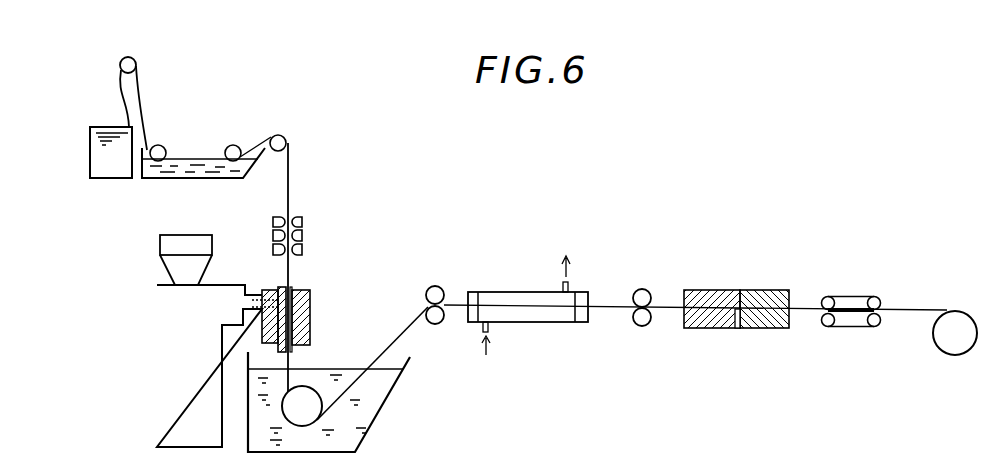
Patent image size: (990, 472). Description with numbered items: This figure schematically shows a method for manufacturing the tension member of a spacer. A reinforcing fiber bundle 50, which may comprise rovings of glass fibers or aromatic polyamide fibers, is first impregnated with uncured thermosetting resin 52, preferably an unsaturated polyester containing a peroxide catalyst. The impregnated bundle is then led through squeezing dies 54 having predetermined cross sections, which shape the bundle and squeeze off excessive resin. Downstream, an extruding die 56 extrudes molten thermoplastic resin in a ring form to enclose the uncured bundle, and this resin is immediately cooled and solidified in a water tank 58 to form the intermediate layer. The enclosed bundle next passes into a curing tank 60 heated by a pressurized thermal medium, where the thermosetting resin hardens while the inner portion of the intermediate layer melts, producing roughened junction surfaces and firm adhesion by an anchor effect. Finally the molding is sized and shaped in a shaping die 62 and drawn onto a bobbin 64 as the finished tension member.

The reinforcing fiber bundle 50 is at (141, 88).
The uncured thermosetting resin 52 is at (205, 157).
The squeezing dies 54 is at (303, 249).
The extruding die 56 is at (310, 314).
The water tank 58 is at (375, 422).
The curing tank 60 is at (510, 292).
The shaping die 62 is at (740, 290).
The bobbin 64 is at (941, 336).